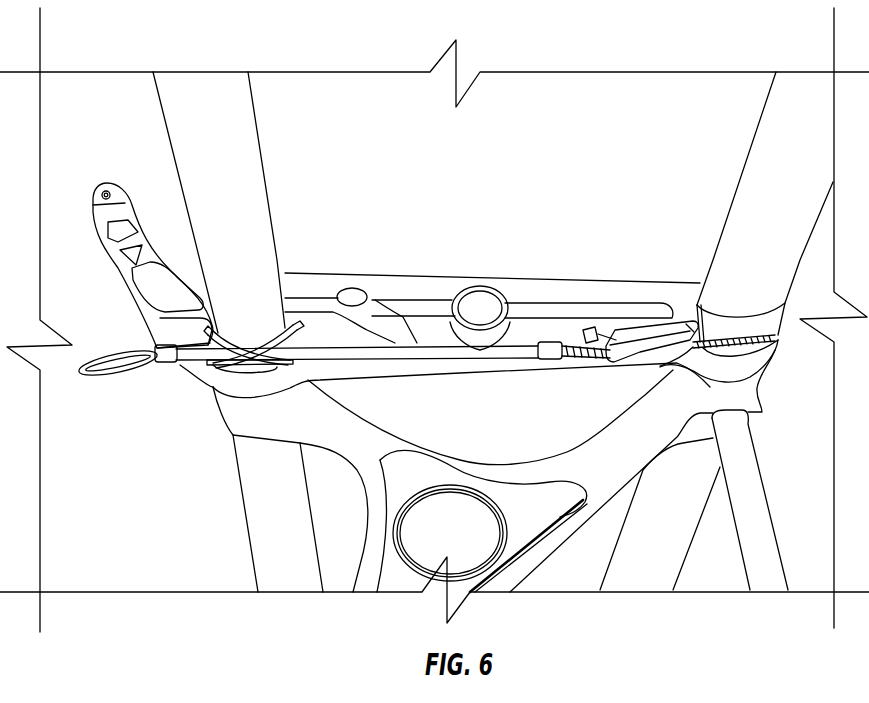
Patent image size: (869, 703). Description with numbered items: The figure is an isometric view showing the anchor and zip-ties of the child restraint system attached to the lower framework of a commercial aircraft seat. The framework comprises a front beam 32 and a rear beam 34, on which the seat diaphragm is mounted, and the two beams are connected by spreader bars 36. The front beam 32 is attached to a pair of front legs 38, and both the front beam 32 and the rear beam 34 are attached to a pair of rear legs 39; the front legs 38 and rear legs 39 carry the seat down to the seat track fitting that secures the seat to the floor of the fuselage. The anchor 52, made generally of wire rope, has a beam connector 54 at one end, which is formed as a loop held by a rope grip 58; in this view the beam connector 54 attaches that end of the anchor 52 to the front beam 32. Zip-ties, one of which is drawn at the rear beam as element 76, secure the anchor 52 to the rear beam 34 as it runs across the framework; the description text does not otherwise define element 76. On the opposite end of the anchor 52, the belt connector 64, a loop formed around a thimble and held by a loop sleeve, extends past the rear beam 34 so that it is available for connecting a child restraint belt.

The front beam 32 is at (755, 172).
The rear beam 34 is at (183, 117).
The spreader bars 36 is at (433, 282).
The front legs 38 is at (757, 513).
The rear legs 39 is at (240, 420).
The anchor 52 is at (423, 373).
The beam connector 54 is at (777, 340).
The rope grip 58 is at (655, 338).
The belt connector 64 is at (88, 382).
The strap 76 is at (216, 389).